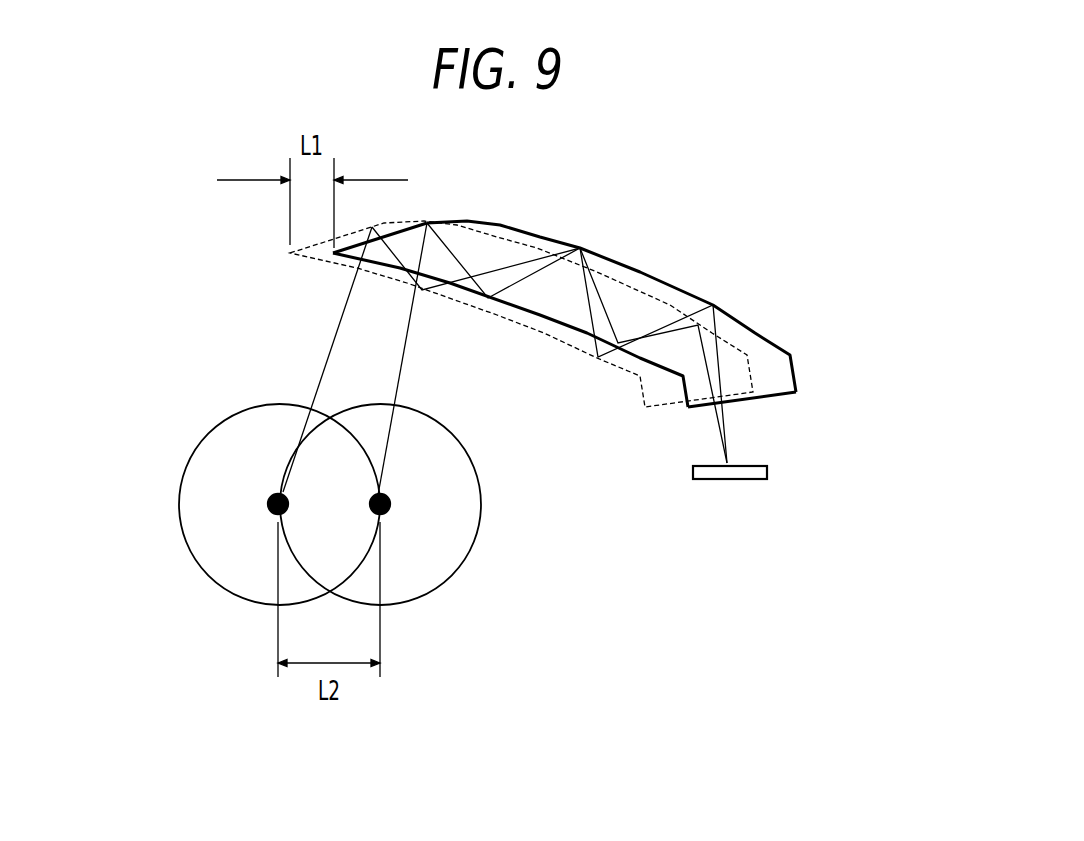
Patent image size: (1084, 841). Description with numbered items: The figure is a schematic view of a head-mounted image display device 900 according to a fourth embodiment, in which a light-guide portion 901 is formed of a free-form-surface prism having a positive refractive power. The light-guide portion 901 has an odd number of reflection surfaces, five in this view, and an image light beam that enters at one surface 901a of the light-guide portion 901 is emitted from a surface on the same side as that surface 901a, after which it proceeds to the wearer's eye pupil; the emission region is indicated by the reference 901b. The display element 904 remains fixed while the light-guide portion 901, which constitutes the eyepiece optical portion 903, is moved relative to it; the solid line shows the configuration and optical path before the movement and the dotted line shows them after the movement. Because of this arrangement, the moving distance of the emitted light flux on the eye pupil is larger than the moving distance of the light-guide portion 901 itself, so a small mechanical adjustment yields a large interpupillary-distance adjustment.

The head-mounted image display device 900 is at (532, 300).
The light-guide portion 901 is at (532, 292).
The eyepiece optical portion 903 is at (521, 319).
The surface of the light-guide portion 901a is at (705, 410).
The light exit surface 901b is at (379, 266).
The display element 904 is at (768, 472).